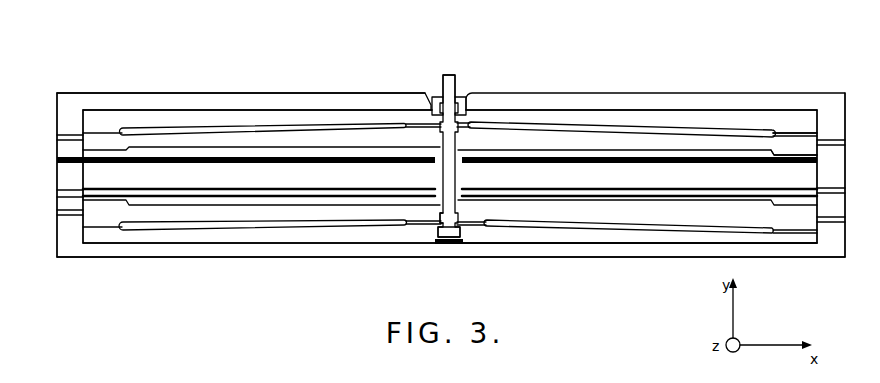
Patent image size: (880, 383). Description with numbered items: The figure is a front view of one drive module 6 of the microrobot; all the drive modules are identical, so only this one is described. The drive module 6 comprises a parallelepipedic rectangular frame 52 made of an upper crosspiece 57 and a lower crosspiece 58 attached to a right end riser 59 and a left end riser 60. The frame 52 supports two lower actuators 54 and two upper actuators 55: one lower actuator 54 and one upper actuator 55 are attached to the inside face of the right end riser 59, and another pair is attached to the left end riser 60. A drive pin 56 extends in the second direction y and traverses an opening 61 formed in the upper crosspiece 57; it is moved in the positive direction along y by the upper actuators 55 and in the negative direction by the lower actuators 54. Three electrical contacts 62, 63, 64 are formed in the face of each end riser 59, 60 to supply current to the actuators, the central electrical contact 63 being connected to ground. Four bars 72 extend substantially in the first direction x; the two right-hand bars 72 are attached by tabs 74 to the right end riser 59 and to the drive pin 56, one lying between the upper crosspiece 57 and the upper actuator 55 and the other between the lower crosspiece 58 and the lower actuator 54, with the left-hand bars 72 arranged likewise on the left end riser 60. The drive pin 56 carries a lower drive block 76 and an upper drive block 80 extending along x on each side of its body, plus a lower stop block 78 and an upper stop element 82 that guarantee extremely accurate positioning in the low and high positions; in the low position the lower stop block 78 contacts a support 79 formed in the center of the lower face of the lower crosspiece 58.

The drive module 6 is at (106, 272).
The frame 52 is at (162, 86).
The lower actuator 54 is at (281, 230).
The upper actuator 55 is at (282, 153).
The drive pin 56 is at (468, 179).
The upper crosspiece 57 is at (233, 93).
The lower crosspiece 58 is at (226, 258).
The right end riser 59 is at (846, 101).
The left end riser 60 is at (56, 100).
The opening 61 is at (436, 78).
The electrical contact 62 is at (70, 155).
The central electrical contact 63 is at (72, 175).
The electrical contact 64 is at (72, 205).
The bar 72 is at (652, 118).
The tab 74 is at (788, 135).
The lower drive block 76 is at (434, 217).
The lower stop block 78 is at (437, 231).
The support 79 is at (461, 240).
The upper drive block 80 is at (435, 122).
The upper stop element 82 is at (472, 84).